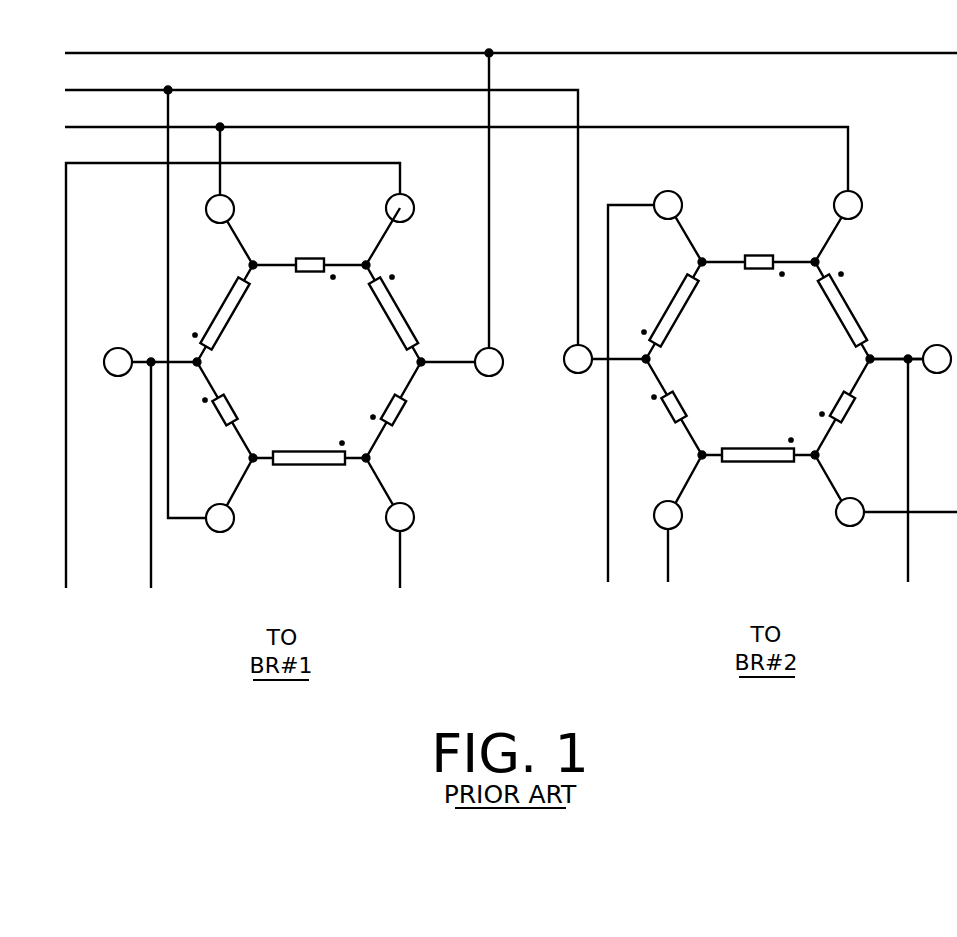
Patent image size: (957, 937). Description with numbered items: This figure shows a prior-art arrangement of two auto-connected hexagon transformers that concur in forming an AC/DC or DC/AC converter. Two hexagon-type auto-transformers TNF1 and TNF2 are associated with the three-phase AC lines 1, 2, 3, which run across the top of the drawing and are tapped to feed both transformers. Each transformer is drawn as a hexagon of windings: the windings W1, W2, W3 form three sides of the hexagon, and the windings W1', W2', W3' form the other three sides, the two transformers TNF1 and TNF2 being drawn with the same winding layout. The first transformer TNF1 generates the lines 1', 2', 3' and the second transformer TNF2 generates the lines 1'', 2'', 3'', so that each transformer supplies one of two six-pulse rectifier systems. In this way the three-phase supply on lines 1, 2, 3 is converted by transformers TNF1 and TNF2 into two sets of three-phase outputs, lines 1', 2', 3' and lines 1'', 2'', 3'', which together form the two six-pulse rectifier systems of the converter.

The three-phase AC line 1 is at (503, 201).
The three-phase AC line 2 is at (313, 297).
The three-phase AC line 3 is at (448, 161).
The output line of transformer TNF1 1' is at (390, 538).
The output line of transformer TNF1 2' is at (150, 487).
The output line of transformer TNF1 3' is at (234, 394).
The output line of transformer TNF2 1'' is at (896, 482).
The output line of transformer TNF2 2'' is at (668, 560).
The output line of transformer TNF2 3'' is at (638, 405).
The hexagon-type auto-transformer TNF1 is at (339, 363).
The hexagon-type auto-transformer TNF2 is at (751, 353).
The winding W1 is at (309, 470).
The winding W2 is at (215, 313).
The winding W3 is at (406, 312).
The winding W1' is at (313, 256).
The winding W2' is at (409, 413).
The winding W3' is at (207, 415).